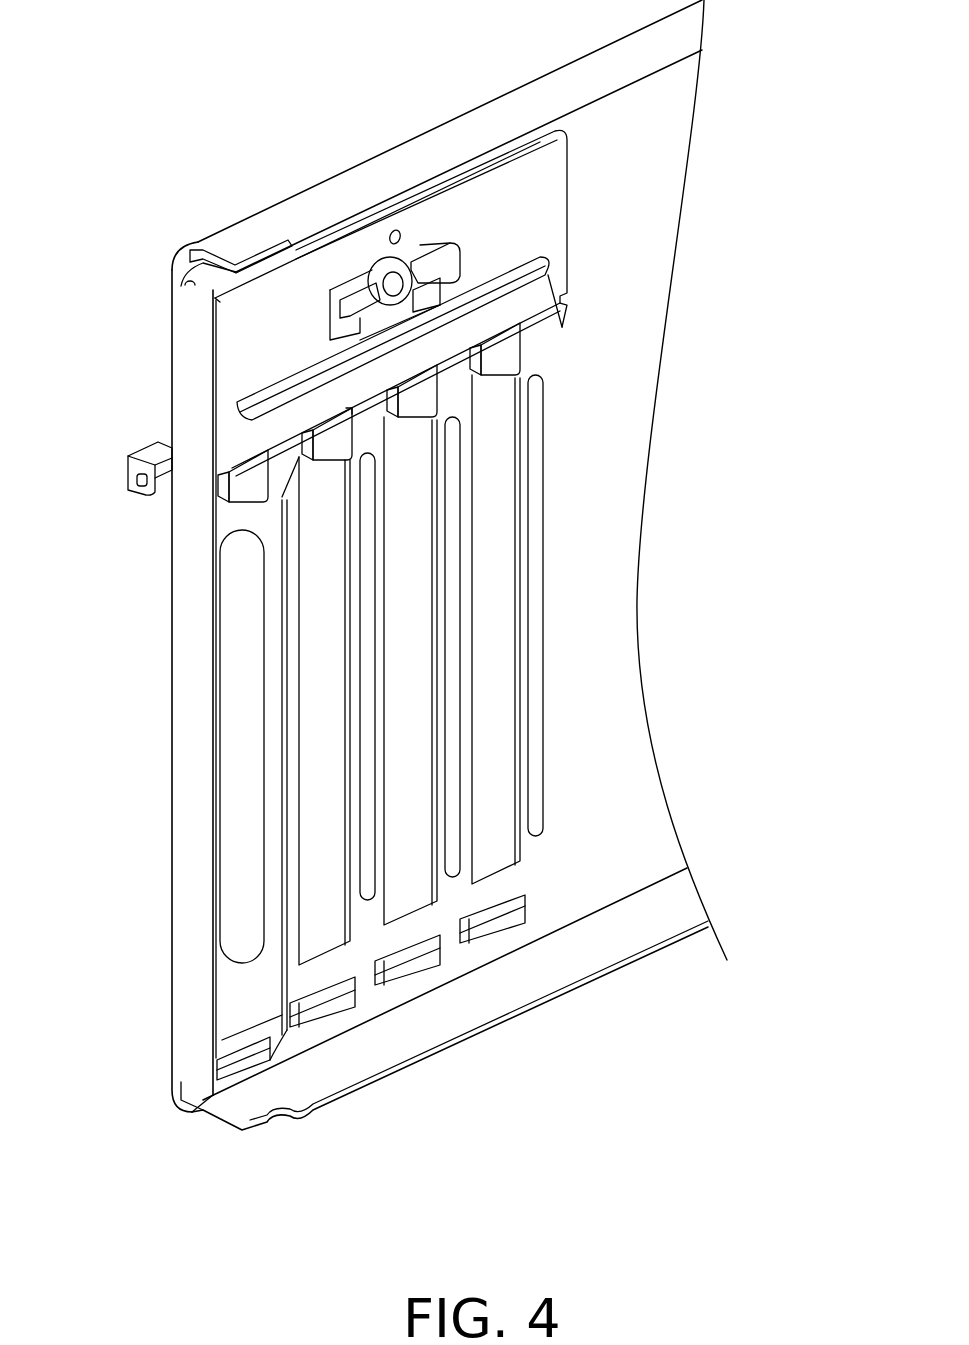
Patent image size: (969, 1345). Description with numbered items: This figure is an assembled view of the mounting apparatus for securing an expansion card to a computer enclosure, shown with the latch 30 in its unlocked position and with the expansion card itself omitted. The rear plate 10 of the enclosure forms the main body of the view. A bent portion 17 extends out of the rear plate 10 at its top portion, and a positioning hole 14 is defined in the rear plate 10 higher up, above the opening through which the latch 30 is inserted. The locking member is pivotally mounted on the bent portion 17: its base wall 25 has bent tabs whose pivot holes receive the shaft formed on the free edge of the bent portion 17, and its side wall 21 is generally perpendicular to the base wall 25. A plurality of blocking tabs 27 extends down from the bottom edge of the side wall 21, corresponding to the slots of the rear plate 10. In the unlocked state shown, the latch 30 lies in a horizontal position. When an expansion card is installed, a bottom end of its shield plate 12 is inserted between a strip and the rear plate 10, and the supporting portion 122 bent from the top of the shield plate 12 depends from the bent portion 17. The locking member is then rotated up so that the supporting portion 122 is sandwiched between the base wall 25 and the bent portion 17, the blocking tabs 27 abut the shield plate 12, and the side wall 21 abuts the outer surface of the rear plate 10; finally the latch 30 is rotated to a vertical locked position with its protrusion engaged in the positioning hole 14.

The rear plate 10 is at (562, 1007).
The shield plate 12 is at (238, 1008).
The positioning hole 14 is at (398, 230).
The bent portion 17 is at (455, 377).
The side wall 21 is at (550, 273).
The base wall 25 is at (163, 457).
The blocking tabs 27 is at (247, 486).
The latch 30 is at (330, 303).
The supporting portion 122 is at (275, 458).